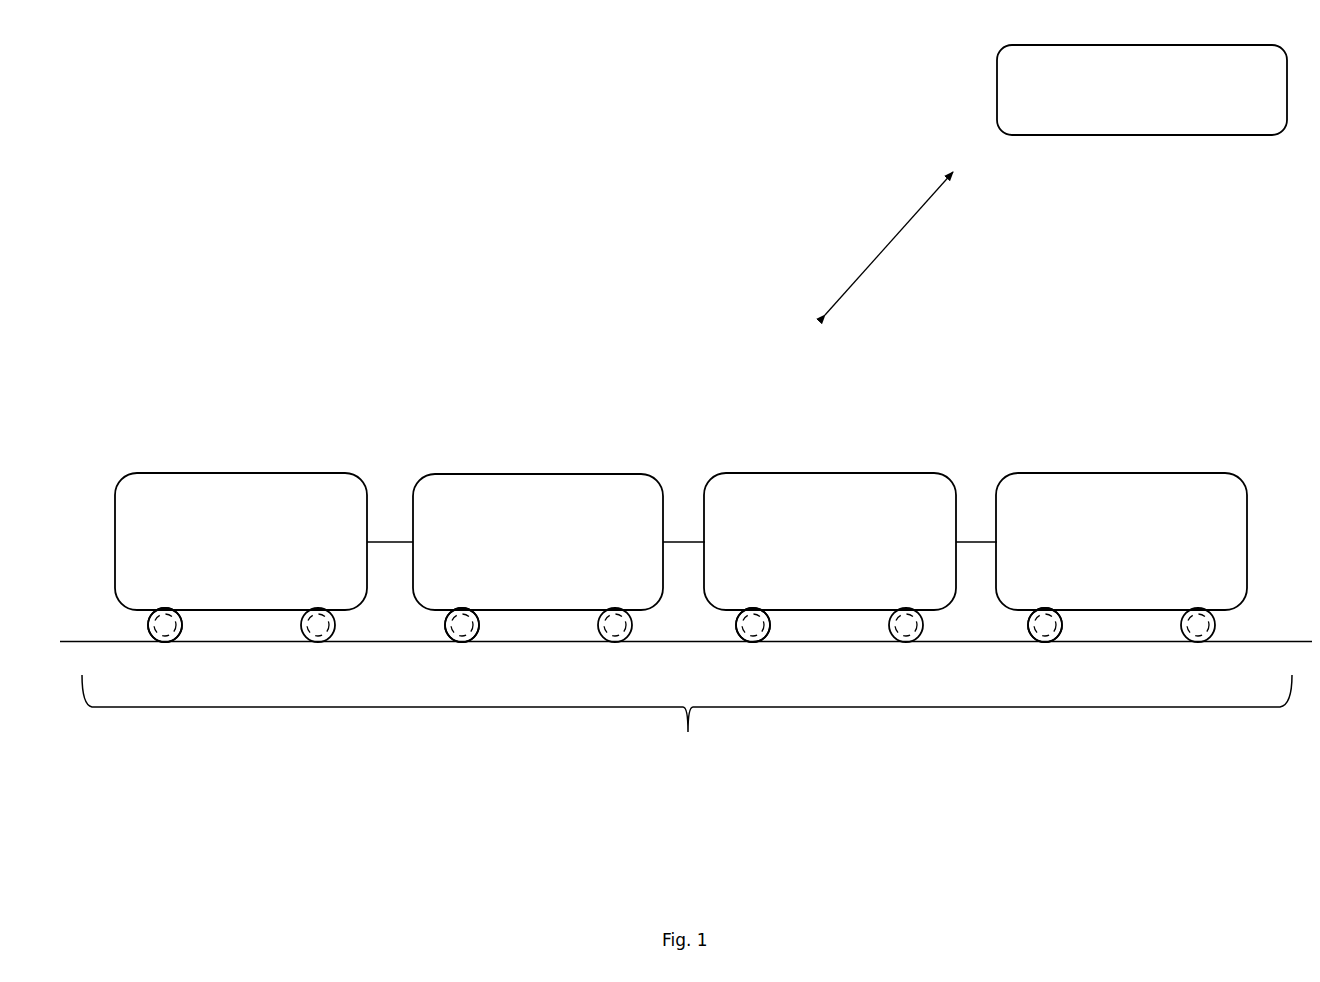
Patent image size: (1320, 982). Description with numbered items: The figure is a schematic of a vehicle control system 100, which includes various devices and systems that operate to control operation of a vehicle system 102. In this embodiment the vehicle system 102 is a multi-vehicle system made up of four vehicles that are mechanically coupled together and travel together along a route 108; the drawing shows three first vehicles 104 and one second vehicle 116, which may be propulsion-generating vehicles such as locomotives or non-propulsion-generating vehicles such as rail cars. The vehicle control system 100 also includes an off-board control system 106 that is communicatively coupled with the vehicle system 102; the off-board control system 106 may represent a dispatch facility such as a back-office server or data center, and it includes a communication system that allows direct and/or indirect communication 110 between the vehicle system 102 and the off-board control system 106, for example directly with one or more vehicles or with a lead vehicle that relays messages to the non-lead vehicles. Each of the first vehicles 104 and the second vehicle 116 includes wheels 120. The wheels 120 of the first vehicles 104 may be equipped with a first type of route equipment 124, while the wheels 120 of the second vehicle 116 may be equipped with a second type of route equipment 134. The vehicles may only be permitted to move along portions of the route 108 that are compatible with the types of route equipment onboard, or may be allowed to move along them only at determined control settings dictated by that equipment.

The vehicle control system 100 is at (306, 101).
The vehicle system 102 is at (687, 722).
The first vehicle 104 is at (167, 472).
The off-board control system 106 is at (996, 90).
The route 108 is at (1086, 645).
The communication 110 is at (889, 243).
The second vehicle 116 is at (783, 472).
The wheels 120 is at (168, 646).
The first type of route equipment 124 is at (152, 634).
The second type of route equipment 134 is at (740, 634).